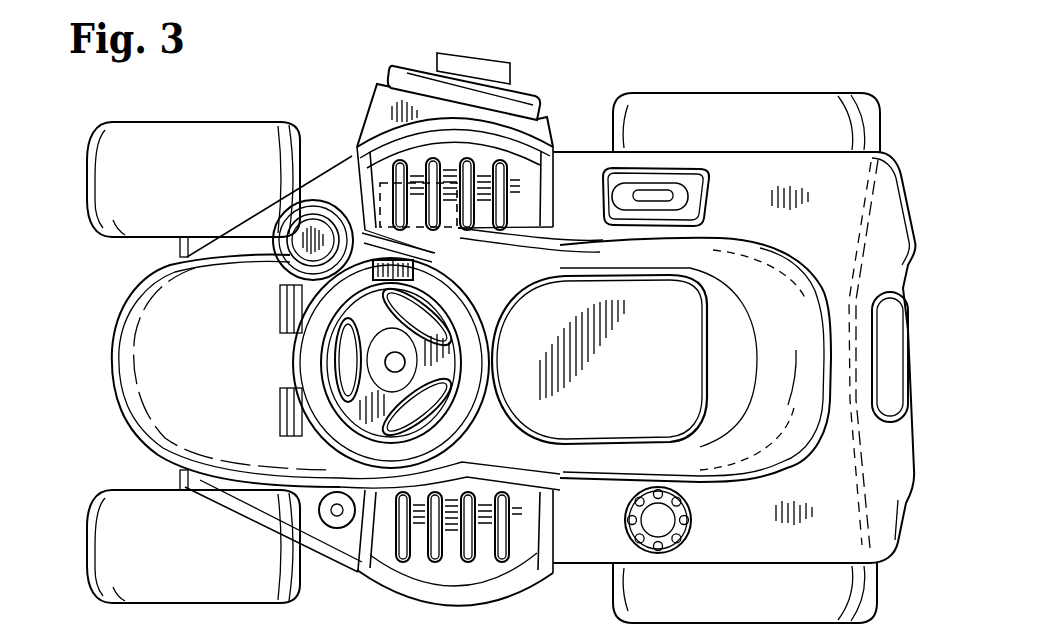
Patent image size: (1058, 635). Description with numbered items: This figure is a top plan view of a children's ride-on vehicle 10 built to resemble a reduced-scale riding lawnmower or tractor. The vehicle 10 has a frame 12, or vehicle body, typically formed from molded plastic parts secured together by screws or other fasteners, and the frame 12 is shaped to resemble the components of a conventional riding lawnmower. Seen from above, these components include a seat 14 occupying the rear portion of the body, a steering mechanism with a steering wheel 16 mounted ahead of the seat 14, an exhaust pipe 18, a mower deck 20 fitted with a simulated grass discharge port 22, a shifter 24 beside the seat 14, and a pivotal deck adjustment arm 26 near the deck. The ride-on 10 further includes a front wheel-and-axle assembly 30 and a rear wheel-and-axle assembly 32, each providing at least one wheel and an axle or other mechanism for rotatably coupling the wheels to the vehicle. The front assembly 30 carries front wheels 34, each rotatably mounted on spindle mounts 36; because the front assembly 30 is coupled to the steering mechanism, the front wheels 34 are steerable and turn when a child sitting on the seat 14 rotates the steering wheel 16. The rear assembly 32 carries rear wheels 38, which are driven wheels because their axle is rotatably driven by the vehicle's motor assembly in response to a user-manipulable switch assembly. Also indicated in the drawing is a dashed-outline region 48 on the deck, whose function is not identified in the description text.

The children's ride-on vehicle 10 is at (273, 92).
The frame 12 is at (112, 356).
The seat 14 is at (667, 396).
The steering wheel 16 is at (296, 362).
The exhaust pipe 18 is at (304, 200).
The mower deck 20 is at (532, 157).
The grass discharge port 22 is at (512, 84).
The shifter 24 is at (645, 186).
The pivotal deck adjustment arm 26 is at (339, 529).
The front wheel-and-axle assembly 30 is at (140, 480).
The rear wheel-and-axle assembly 32 is at (908, 542).
The front wheels 34 is at (212, 193).
The spindle mounts 36 is at (180, 246).
The rear wheels 38 is at (759, 139).
The battery compartment 48 is at (382, 165).